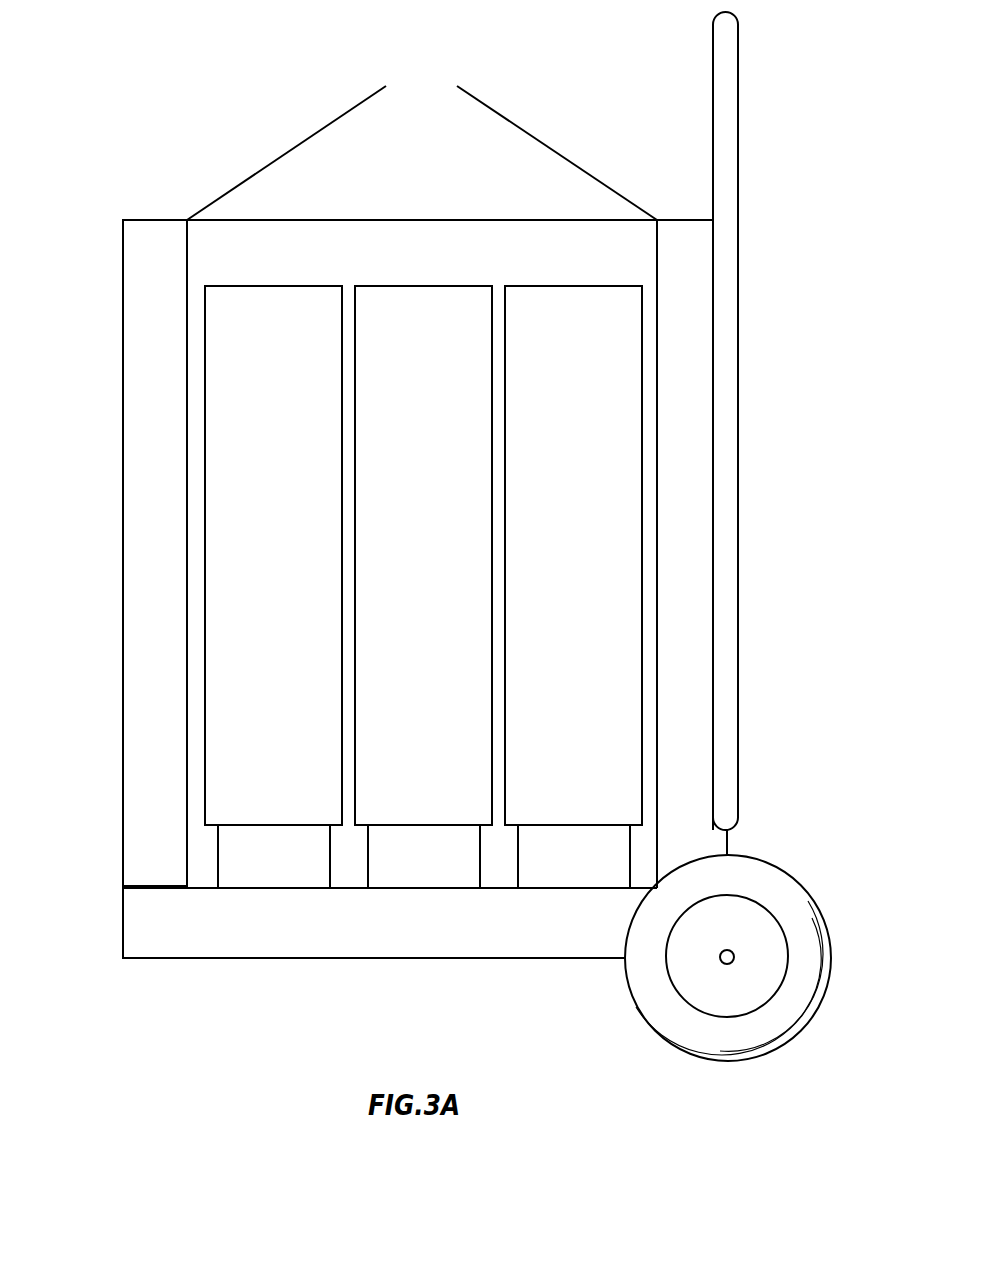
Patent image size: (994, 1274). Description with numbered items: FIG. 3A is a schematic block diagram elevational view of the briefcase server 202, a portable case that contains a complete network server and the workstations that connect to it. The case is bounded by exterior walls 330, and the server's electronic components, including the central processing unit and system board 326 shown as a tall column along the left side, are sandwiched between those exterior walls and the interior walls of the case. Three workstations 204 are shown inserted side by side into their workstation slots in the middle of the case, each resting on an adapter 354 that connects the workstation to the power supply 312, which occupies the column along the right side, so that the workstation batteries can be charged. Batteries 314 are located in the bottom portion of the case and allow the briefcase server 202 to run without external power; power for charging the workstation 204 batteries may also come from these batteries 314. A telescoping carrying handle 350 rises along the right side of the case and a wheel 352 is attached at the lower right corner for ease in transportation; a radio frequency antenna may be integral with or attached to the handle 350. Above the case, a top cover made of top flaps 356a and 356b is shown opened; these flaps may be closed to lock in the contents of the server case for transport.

The briefcase server 202 is at (190, 1003).
The workstation 204 is at (253, 708).
The power supply 312 is at (665, 390).
The batteries 314 is at (238, 938).
The central processing unit and system board 326 is at (132, 865).
The exterior walls 330 is at (122, 323).
The telescoping carrying handle 350 is at (738, 133).
The wheels 352 is at (763, 858).
The adapters 354 is at (255, 883).
The top flap 356a is at (507, 118).
The top flap 356b is at (306, 138).